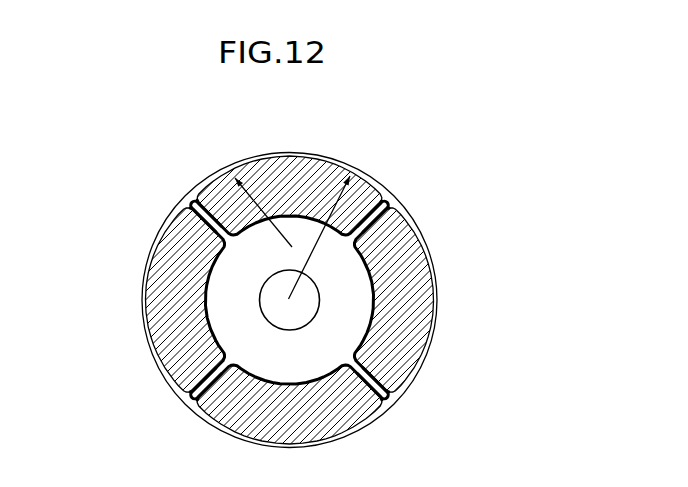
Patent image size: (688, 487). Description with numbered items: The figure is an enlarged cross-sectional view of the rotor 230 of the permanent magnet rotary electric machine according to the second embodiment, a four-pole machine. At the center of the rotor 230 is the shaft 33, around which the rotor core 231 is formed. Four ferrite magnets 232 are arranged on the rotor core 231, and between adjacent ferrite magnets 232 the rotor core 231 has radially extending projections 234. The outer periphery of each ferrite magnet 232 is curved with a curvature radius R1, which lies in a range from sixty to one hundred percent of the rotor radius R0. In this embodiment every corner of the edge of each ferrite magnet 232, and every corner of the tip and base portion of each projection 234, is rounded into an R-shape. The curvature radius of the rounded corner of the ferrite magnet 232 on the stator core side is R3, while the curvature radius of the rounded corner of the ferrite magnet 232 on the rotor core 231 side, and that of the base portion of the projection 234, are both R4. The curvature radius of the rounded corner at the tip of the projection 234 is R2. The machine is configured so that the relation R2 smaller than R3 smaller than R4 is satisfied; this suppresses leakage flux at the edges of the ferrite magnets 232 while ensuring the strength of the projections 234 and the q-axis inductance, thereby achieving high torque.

The rotor 230 is at (433, 341).
The rotor core 231 is at (225, 328).
The ferrite magnet 232 is at (152, 307).
The projection 234 is at (196, 399).
The shaft 33 is at (282, 316).
The rotor radius R0 is at (317, 243).
The curvature radius of outer periphery of the magnet R1 is at (265, 218).
The curvature radius of the R-shape of the corner of the tip of the projection R2 is at (393, 205).
The curvature radius of the R-shape of the corner of the ferrite magnet on the stato R3 is at (191, 221).
The curvature radius of the R-shape of the corner of the ferrite magnet on the rotor R4 is at (336, 206).